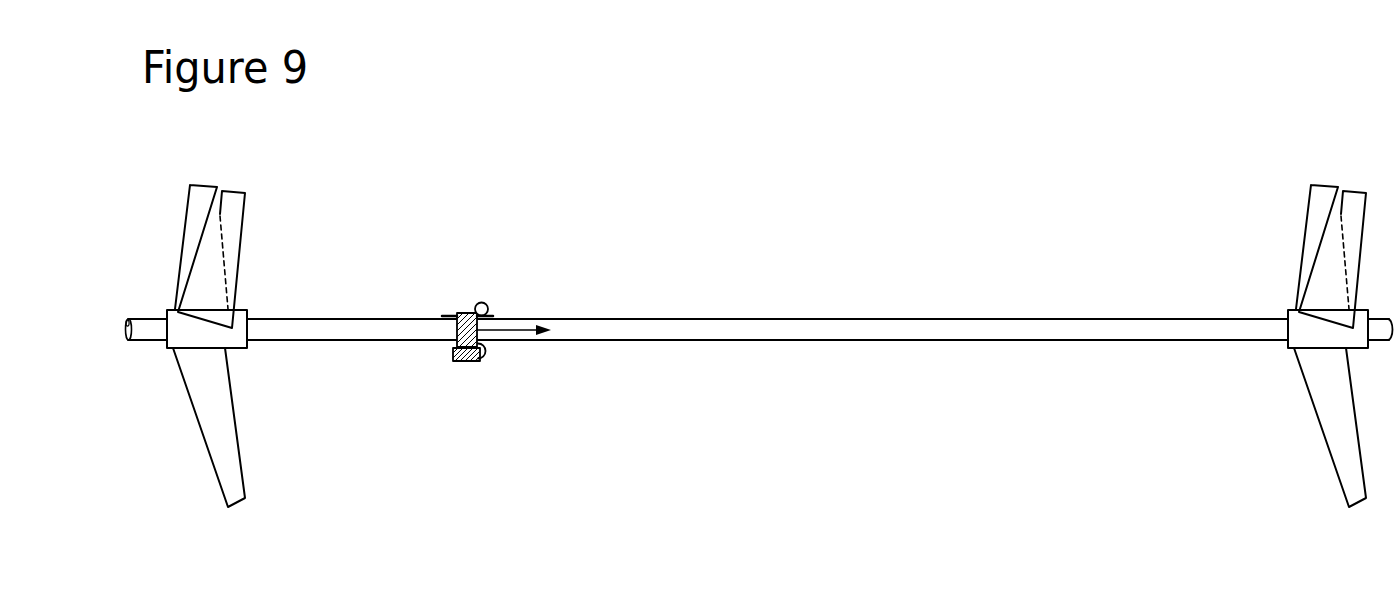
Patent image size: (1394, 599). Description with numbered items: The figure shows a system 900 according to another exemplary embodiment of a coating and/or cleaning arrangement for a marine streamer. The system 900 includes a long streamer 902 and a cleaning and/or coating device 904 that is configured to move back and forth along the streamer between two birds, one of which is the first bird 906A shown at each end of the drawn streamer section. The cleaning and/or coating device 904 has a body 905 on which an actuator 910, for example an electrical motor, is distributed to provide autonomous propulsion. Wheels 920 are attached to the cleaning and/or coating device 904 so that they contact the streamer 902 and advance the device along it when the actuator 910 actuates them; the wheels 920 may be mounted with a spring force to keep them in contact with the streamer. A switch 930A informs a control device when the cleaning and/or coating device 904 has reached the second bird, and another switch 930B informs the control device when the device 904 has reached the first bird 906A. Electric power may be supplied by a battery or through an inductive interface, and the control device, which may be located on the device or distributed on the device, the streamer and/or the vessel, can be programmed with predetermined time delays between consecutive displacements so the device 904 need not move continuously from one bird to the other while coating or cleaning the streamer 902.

The system 900 is at (764, 154).
The streamer 902 is at (945, 341).
The cleaning and/or coating device 904 is at (461, 303).
The body 905 is at (455, 340).
The first bird 906A is at (203, 208).
The actuator 910 is at (468, 381).
The wheels 920 is at (488, 293).
The switch 930A is at (492, 313).
The switch 930B is at (447, 313).